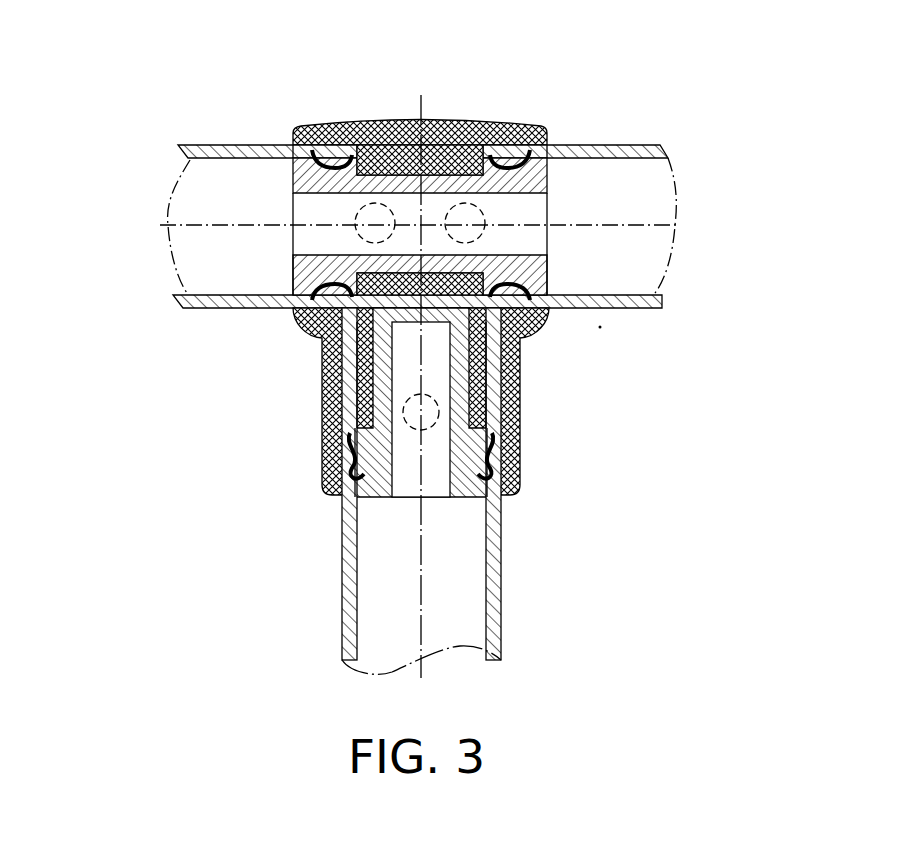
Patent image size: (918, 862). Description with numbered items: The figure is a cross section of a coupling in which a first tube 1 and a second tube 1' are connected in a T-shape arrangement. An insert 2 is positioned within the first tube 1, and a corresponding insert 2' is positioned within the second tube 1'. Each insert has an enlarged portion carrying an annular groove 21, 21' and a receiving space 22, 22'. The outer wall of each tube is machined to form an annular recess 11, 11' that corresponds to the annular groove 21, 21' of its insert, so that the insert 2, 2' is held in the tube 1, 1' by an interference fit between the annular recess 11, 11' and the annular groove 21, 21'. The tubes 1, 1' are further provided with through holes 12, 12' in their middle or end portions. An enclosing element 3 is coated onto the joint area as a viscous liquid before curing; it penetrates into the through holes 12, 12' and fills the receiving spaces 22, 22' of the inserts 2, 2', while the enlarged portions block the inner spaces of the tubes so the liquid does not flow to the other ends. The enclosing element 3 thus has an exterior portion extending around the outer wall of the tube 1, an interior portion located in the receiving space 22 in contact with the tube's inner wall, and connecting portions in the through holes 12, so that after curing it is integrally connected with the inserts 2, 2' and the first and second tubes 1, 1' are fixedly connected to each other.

The first tube 1 is at (396, 491).
The insert 2 is at (460, 450).
The enclosing element 3 is at (313, 122).
The annular recess 11 is at (375, 471).
The through holes 12 is at (435, 401).
The annular groove 21 is at (374, 503).
The receiving space 22 is at (479, 375).
The second tube 1' is at (422, 190).
The insert of second tube 2' is at (419, 180).
The annular recess of second tube 11' is at (471, 180).
The through holes of second tube 12' is at (506, 141).
The annular groove of second insert 21' is at (454, 312).
The receiving space of second insert 22' is at (459, 176).